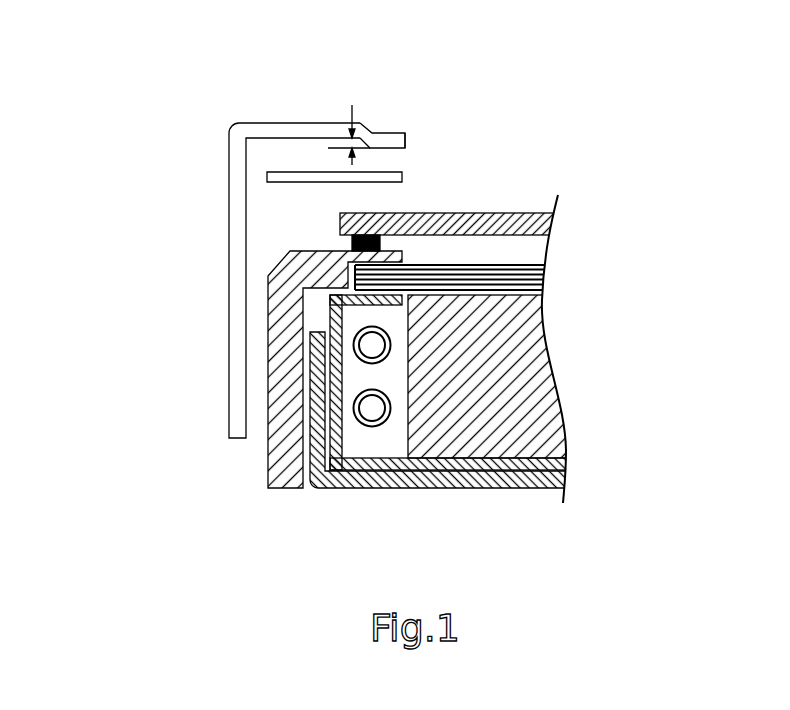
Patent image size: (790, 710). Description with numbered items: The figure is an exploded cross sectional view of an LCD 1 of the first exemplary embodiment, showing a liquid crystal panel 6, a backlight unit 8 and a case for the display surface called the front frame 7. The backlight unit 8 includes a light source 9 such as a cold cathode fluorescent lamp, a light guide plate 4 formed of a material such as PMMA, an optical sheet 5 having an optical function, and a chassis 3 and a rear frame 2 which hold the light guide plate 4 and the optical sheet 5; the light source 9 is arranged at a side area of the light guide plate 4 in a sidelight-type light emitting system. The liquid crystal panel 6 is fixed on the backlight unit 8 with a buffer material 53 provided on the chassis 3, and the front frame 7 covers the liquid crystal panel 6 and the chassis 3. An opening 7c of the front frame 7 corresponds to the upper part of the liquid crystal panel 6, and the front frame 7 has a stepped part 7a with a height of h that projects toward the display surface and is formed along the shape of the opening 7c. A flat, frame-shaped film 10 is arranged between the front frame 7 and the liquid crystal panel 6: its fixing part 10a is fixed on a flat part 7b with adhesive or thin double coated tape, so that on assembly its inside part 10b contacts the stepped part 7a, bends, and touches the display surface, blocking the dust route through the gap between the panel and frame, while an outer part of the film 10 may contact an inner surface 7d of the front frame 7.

The LCD 1 is at (87, 120).
The rear frame 2 is at (563, 477).
The chassis 3 is at (283, 488).
The light guide plate 4 is at (545, 352).
The optical sheet 5 is at (545, 263).
The liquid crystal panel 6 is at (507, 213).
The front frame 7 is at (323, 128).
The stepped part 7a is at (388, 132).
The flat part 7b is at (258, 118).
The opening 7c is at (427, 138).
The inner surface 7d is at (245, 273).
The backlight unit 8 is at (277, 533).
The light source 9 is at (375, 408).
The film 10 is at (312, 175).
The fixing part 10a is at (272, 172).
The inside part 10b is at (393, 168).
The buffer material 53 is at (352, 243).
The height h is at (365, 133).